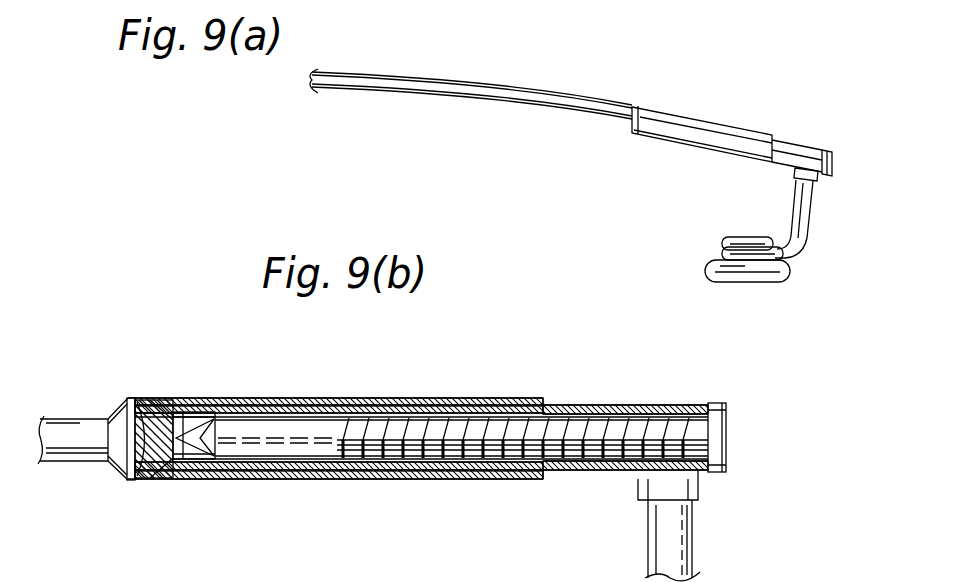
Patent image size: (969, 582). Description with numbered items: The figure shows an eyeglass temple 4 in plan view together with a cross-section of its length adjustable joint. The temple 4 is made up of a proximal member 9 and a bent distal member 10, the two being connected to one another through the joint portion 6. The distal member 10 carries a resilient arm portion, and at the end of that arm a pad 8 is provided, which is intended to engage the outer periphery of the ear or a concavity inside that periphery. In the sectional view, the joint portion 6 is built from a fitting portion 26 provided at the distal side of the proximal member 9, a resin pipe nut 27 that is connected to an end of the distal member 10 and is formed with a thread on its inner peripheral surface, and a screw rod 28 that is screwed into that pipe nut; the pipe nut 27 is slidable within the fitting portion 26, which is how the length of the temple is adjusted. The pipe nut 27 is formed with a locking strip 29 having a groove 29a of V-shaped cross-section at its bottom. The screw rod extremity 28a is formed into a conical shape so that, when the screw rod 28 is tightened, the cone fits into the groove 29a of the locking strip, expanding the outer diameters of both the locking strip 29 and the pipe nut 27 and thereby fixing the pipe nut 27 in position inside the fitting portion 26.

In FIG. 9A, the temple 4 is at (526, 90).
In FIG. 9A, the joint portion 6 is at (720, 116).
In FIG. 9A, the pad 8 is at (743, 283).
In FIG. 9A, the distal member 10 is at (810, 208).
In FIG. 9B, the distal member 10 is at (695, 528).
In FIG. 9B, the proximal member 9 is at (64, 420).
In FIG. 9B, the fitting portion 26 is at (383, 398).
In FIG. 9B, the resin pipe nut 27 is at (588, 406).
In FIG. 9B, the screw rod 28 is at (727, 432).
In FIG. 9B, the screw rod extremity 28a is at (218, 432).
In FIG. 9B, the locking strip 29 is at (168, 478).
In FIG. 9B, the groove 29a is at (175, 399).